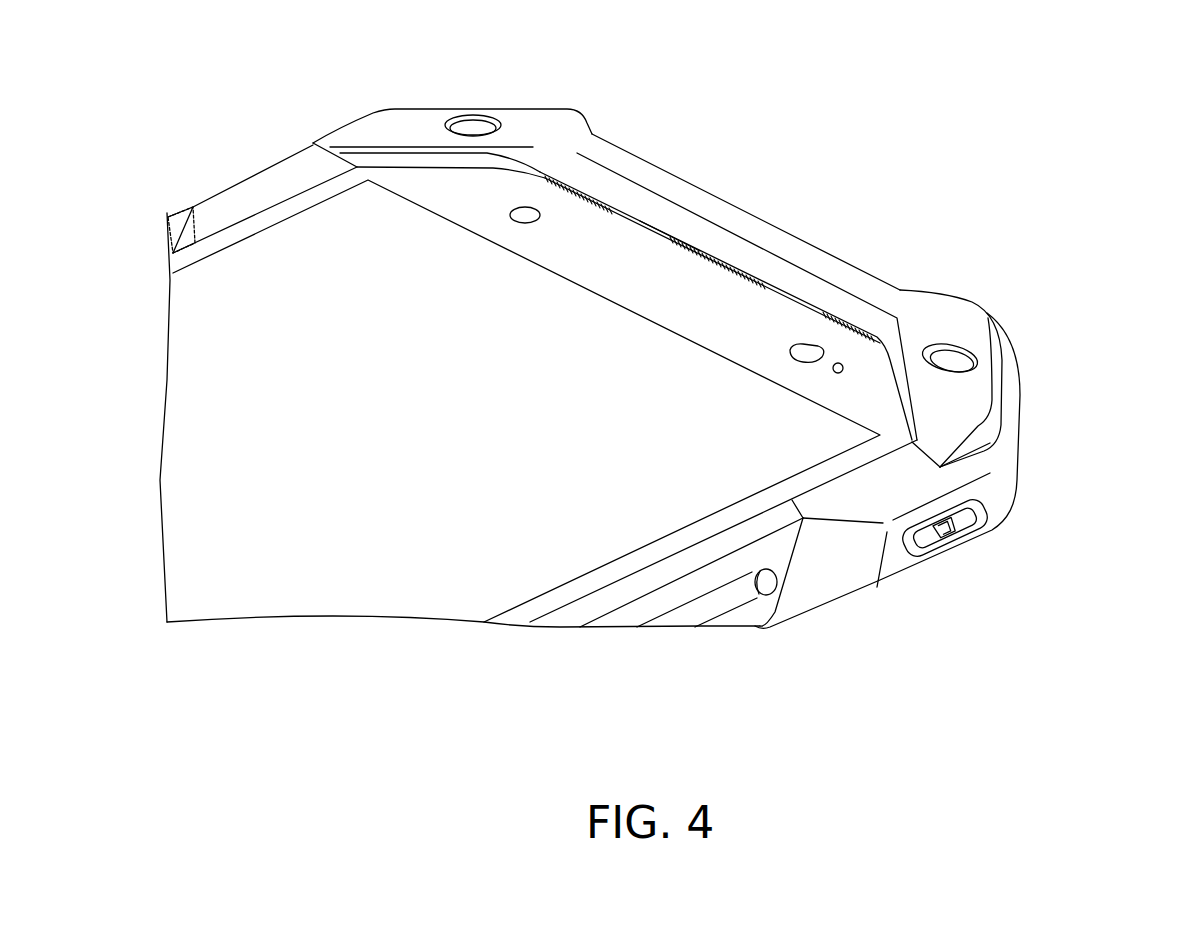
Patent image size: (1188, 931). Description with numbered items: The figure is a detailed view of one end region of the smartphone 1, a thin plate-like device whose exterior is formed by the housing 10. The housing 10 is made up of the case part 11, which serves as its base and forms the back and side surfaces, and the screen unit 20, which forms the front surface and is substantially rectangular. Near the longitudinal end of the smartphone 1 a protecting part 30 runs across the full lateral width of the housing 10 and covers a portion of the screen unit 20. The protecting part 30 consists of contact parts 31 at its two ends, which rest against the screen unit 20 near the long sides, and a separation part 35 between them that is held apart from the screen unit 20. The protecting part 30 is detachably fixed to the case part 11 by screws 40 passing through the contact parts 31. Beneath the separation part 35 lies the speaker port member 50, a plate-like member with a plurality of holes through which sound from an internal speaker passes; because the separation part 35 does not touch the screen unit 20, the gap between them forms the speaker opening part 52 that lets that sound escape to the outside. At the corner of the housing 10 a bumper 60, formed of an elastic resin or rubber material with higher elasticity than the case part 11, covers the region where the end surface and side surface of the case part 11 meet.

The smartphone 1 is at (876, 128).
The housing 10 is at (692, 698).
The case part 11 is at (690, 610).
The screen unit 20 is at (590, 533).
The protecting part 30 is at (556, 306).
The contact part 31 is at (407, 123).
The separation part 35 is at (713, 205).
The screw 40 is at (472, 127).
The speaker port member 50 is at (792, 293).
The speaker opening part 52 is at (651, 240).
The bumper 60 is at (1013, 417).